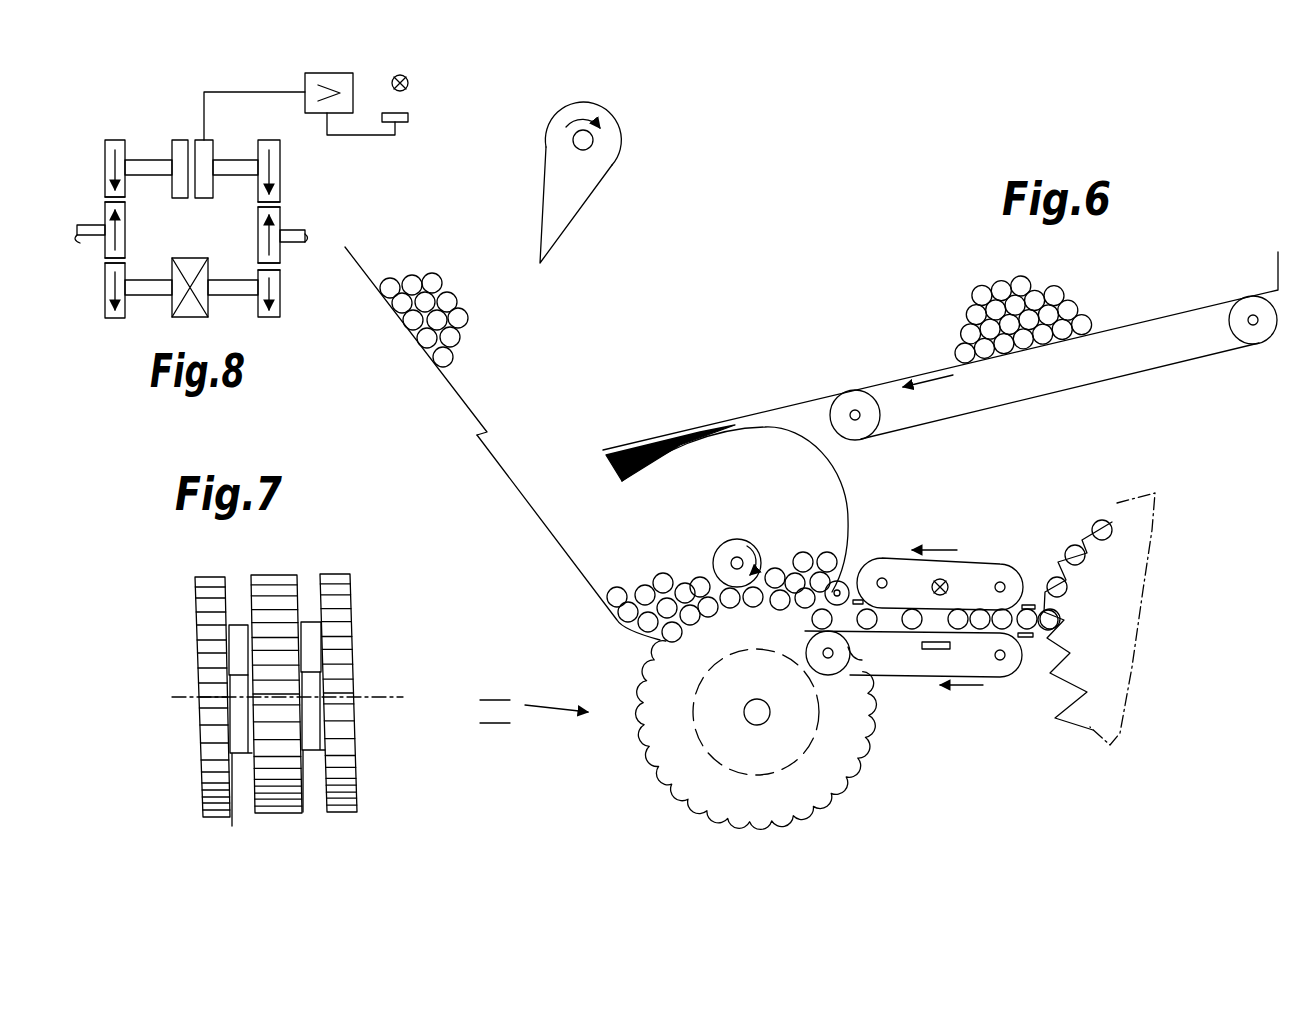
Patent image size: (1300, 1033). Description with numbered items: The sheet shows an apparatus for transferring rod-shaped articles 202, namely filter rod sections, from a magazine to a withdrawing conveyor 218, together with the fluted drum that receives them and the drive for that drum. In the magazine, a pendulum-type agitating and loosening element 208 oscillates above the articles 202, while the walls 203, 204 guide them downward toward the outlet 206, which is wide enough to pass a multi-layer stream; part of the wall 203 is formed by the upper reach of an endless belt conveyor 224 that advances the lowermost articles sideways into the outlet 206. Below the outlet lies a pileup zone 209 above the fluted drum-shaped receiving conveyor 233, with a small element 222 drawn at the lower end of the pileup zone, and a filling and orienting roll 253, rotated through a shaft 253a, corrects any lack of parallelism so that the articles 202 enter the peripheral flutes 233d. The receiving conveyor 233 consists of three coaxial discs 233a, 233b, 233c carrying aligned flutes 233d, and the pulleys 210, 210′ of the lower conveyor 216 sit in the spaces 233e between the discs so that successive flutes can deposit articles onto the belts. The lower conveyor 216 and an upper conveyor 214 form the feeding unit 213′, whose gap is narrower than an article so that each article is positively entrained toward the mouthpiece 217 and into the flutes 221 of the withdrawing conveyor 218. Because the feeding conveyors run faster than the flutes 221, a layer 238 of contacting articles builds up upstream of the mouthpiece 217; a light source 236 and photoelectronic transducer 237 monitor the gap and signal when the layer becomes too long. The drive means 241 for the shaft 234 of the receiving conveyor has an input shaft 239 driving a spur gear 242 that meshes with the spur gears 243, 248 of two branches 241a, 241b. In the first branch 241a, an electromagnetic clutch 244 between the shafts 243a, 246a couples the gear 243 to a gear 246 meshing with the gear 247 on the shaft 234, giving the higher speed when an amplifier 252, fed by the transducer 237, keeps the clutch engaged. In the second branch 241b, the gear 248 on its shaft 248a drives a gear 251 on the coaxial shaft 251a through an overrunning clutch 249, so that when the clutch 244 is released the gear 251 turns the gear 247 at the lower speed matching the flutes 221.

In FIG. 6, the articles 202 is at (1057, 287).
In FIG. 6, the wall 203 is at (728, 422).
In FIG. 6, the wall 204 is at (463, 403).
In FIG. 6, the outlet 206 is at (560, 530).
In FIG. 6, the agitating and loosening element 208 is at (605, 163).
In FIG. 6, the pileup zone 209 is at (817, 473).
In FIG. 7, the pulley 210 is at (237, 633).
In FIG. 7, the pulley 210′ is at (310, 633).
In FIG. 6, the pulley 210′ is at (848, 647).
In FIG. 6, the feeding unit 213′ is at (947, 535).
In FIG. 6, the conveyor 214 is at (963, 570).
In FIG. 6, the conveyor 216 is at (928, 668).
In FIG. 6, the mouthpiece 217 is at (1020, 603).
In FIG. 6, the withdrawing conveyor 218 is at (1140, 567).
In FIG. 6, the flutes 221 is at (1073, 697).
In FIG. 6, the roller 222 is at (838, 580).
In FIG. 6, the endless belt conveyor 224 is at (1145, 358).
In FIG. 6, the fluted drum-shaped receiving conveyor 233 is at (637, 768).
In FIG. 7, the disc 233a is at (232, 826).
In FIG. 7, the disc 233b is at (297, 810).
In FIG. 7, the disc 233c is at (357, 810).
In FIG. 6, the disc 233c is at (647, 730).
In FIG. 6, the peripheral flutes 233d is at (705, 803).
In FIG. 7, the spaces 233e is at (237, 769).
In FIG. 8, the shaft 234 is at (293, 228).
In FIG. 6, the shaft 234 is at (755, 711).
In FIG. 8, the light source 236 is at (408, 83).
In FIG. 6, the light source 236 is at (941, 583).
In FIG. 8, the photoelectronic transducer 237 is at (408, 117).
In FIG. 6, the photoelectronic transducer 237 is at (925, 650).
In FIG. 6, the layer 238 is at (967, 635).
In FIG. 8, the shaft 239 is at (90, 246).
In FIG. 8, the drive means 241 is at (280, 333).
In FIG. 8, the branch 241a is at (153, 150).
In FIG. 8, the branch 241b is at (138, 307).
In FIG. 8, the spur gear 242 is at (118, 247).
In FIG. 8, the spur gear 243 is at (108, 152).
In FIG. 8, the shaft 243a is at (142, 175).
In FIG. 8, the electromagnetic clutch 244 is at (195, 133).
In FIG. 8, the gear 246 is at (280, 162).
In FIG. 8, the shaft 246a is at (237, 165).
In FIG. 8, the gear 247 is at (270, 252).
In FIG. 8, the spur gear 248 is at (103, 310).
In FIG. 8, the shaft 248a is at (152, 295).
In FIG. 8, the overrunning clutch 249 is at (207, 300).
In FIG. 8, the gear 251 is at (277, 308).
In FIG. 8, the shaft 251a is at (227, 282).
In FIG. 8, the amplifier 252 is at (305, 77).
In FIG. 6, the filling and orienting roll 253 is at (728, 550).
In FIG. 6, the shaft 253a is at (731, 562).